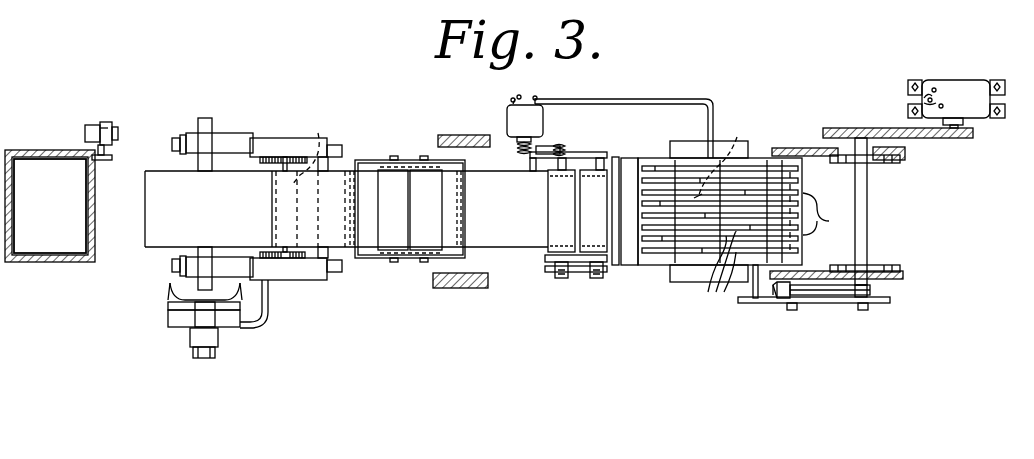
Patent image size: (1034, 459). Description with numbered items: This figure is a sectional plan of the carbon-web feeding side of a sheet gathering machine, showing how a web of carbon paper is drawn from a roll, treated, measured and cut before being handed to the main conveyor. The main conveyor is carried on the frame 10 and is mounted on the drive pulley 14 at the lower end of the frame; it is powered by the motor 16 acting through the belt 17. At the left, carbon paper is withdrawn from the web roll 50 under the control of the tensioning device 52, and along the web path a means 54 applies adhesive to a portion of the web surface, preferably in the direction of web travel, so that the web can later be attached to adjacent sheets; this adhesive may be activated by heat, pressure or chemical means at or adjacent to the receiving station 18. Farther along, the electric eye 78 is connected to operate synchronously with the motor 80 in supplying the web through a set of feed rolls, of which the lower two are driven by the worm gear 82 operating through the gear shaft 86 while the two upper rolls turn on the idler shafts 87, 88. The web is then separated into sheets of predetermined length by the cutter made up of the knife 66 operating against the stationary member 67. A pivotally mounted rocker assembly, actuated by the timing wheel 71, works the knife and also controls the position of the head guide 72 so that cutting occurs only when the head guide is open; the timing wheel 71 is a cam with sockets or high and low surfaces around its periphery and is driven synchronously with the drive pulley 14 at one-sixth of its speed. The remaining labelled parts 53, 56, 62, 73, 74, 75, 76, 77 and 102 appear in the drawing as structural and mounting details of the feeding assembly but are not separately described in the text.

The frame 10 is at (451, 134).
The drive pulley 14 is at (878, 268).
The motor 16 is at (964, 88).
The belt 17 is at (893, 132).
The receiving station 18 is at (52, 264).
The web roll 50 is at (158, 180).
The tensioning device 52 is at (236, 141).
The belt section 53 is at (308, 148).
The adhesive applying means 54 is at (412, 191).
The conveyor section 56 is at (506, 248).
The heater unit 62 is at (686, 275).
The knife 66 is at (616, 268).
The stationary member 67 is at (630, 166).
The timing wheel 71 is at (807, 298).
The head guide 72 is at (821, 214).
The bearing 73 is at (877, 304).
The base plate 74 is at (824, 304).
The post 75 is at (755, 300).
The gear 76 is at (781, 300).
The heater elements 77 is at (717, 273).
The electric eye 78 is at (724, 157).
The motor 80 is at (516, 128).
The worm gear 82 is at (546, 153).
The gear shaft 86 is at (580, 272).
The idler shaft 87 is at (557, 236).
The idler shaft 88 is at (598, 179).
The valve 102 is at (99, 132).